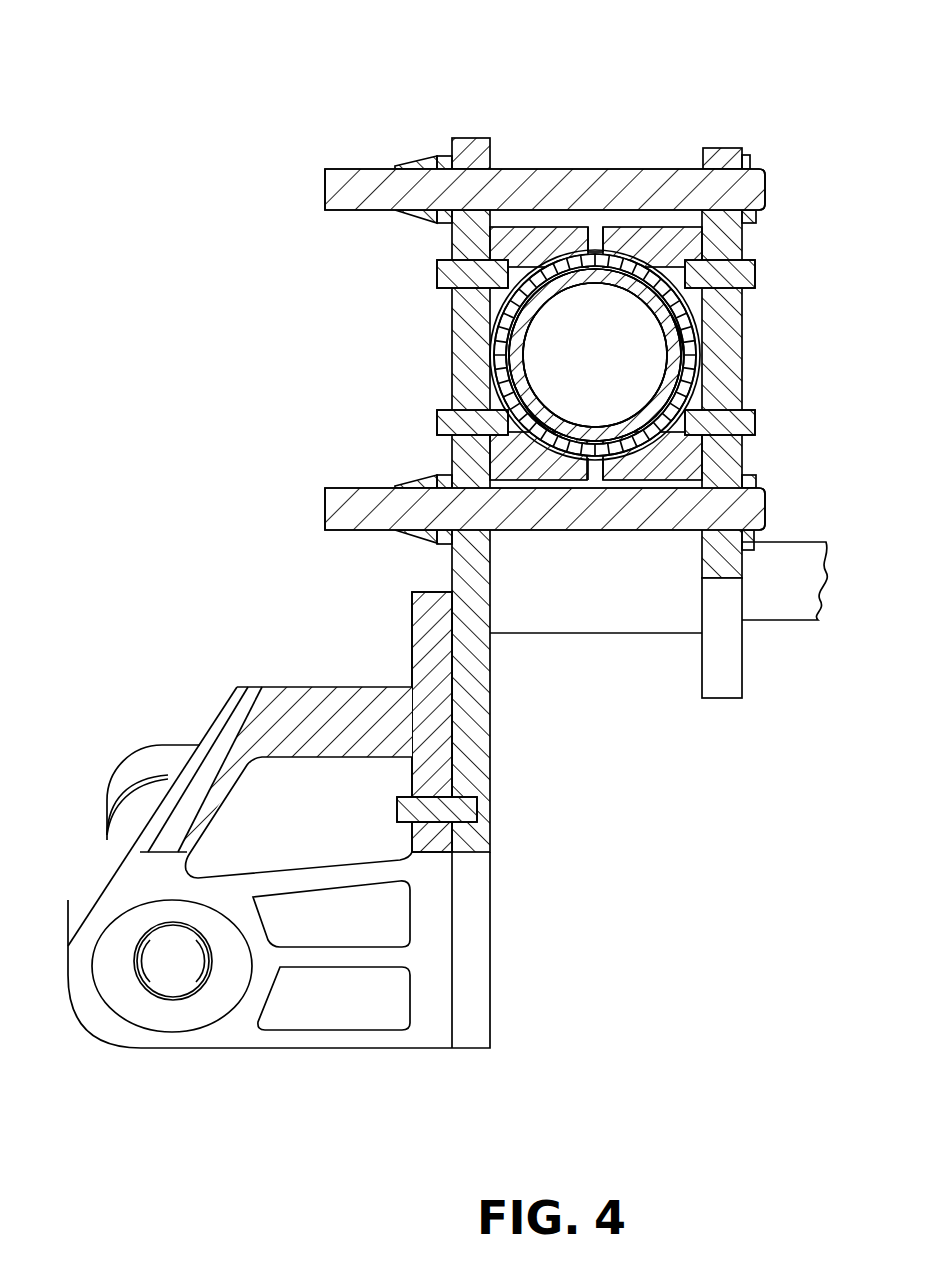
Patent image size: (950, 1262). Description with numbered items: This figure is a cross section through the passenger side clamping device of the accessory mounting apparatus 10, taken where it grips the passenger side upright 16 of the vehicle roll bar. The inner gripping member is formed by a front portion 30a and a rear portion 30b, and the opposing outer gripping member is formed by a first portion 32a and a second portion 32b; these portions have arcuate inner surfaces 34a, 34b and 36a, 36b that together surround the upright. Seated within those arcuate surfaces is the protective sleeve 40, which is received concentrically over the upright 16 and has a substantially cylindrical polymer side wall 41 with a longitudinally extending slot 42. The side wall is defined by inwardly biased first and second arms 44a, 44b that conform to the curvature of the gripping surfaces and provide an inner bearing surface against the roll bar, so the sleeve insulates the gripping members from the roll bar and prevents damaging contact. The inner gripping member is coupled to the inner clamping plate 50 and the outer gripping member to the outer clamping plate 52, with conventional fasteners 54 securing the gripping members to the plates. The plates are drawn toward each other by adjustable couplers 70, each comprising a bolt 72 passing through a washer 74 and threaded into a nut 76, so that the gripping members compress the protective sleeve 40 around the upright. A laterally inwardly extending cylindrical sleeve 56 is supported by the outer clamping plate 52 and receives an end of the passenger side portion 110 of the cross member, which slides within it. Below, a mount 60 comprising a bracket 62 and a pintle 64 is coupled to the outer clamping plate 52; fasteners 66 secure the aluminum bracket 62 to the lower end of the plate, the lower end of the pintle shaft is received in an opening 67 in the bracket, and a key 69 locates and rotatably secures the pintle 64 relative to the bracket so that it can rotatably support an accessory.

The accessory mounting apparatus 10 is at (183, 123).
The passenger side upright 16 is at (700, 400).
The front portion 30a is at (690, 243).
The rear portion 30b is at (690, 460).
The first portion 32a is at (510, 243).
The second portion 32b is at (510, 455).
The arcuate inner surface 34a is at (622, 250).
The arcuate inner surface 34b is at (610, 485).
The arcuate inner surface 36a is at (570, 250).
The arcuate inner surface 36b is at (582, 485).
The protective sleeve 40 is at (500, 380).
The side wall 41 is at (690, 352).
The longitudinally extending slot 42 is at (612, 250).
The first arm 44a is at (470, 320).
The second arm 44b is at (722, 322).
The inner clamping plate 50 is at (722, 148).
The outer clamping plate 52 is at (470, 138).
The fasteners 54 is at (440, 275).
The cylindrical sleeve 56 is at (588, 633).
The mount 60 is at (133, 1070).
The bracket 62 is at (232, 1045).
The pintle 64 is at (135, 768).
The fasteners 66 is at (478, 812).
The opening 67 is at (133, 957).
The key 69 is at (173, 929).
The adjustable couplers 70 is at (335, 155).
The bolt 72 is at (325, 186).
The washer 74 is at (452, 150).
The nut 76 is at (440, 158).
The passenger side portion 110 is at (790, 610).